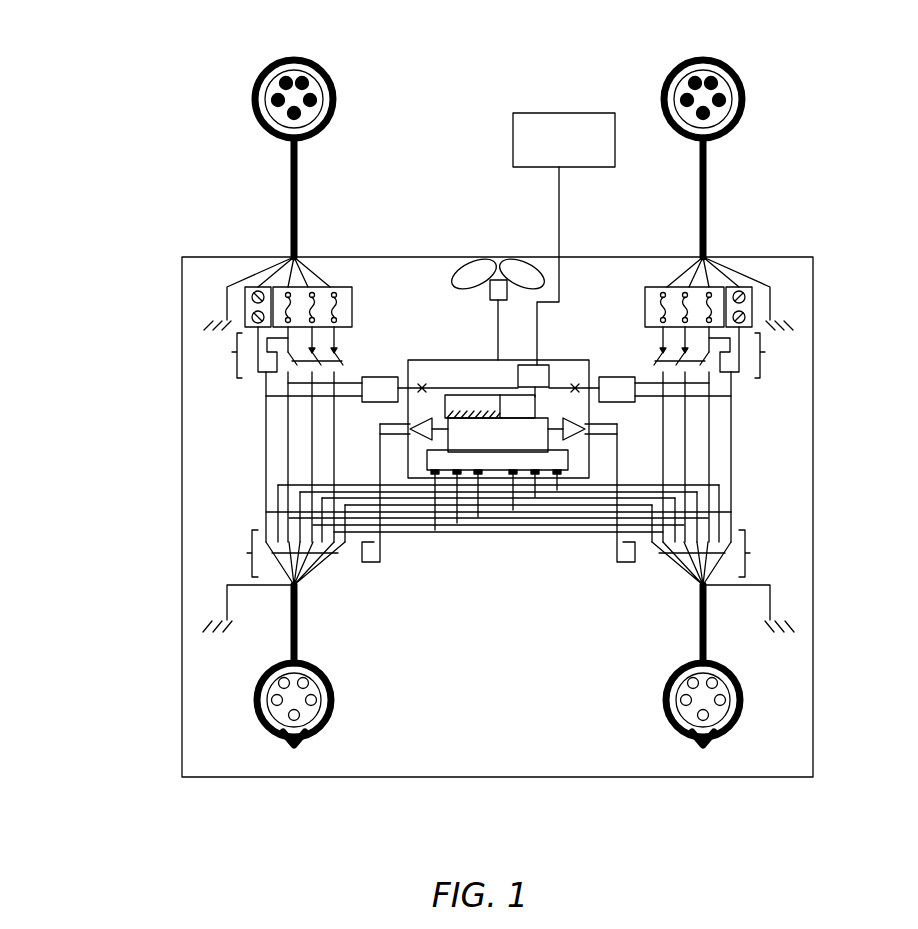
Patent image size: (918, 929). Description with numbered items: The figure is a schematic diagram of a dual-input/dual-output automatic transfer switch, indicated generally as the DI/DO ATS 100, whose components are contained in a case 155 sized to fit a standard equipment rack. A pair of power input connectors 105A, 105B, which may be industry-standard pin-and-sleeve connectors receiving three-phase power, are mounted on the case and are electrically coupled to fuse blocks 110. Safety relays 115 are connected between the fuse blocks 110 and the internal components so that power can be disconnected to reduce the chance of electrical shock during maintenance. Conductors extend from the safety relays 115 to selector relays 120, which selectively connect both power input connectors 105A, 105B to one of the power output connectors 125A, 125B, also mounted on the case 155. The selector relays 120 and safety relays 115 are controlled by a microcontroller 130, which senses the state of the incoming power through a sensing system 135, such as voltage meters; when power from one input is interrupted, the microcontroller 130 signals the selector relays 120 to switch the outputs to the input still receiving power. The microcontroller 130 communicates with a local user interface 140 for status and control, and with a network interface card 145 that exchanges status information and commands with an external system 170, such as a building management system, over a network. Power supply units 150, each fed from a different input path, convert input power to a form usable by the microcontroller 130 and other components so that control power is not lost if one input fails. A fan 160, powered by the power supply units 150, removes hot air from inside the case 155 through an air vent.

The DI/DO ATS 100 is at (205, 188).
The power input connector 105A is at (298, 57).
The power input connector 105B is at (700, 57).
The fuse blocks 110 is at (352, 299).
The safety relays 115 is at (497, 434).
The selector relays 120 is at (247, 553).
The power output connector 125A is at (333, 726).
The power output connector 125B is at (672, 726).
The microcontroller 130 is at (533, 440).
The sensing system 135 is at (497, 462).
The local user interface 140 is at (462, 404).
The network interface card 145 is at (536, 367).
The power supply units 150 is at (383, 385).
The case 155 is at (636, 257).
The fan 160 is at (500, 290).
The external system 170 is at (587, 157).